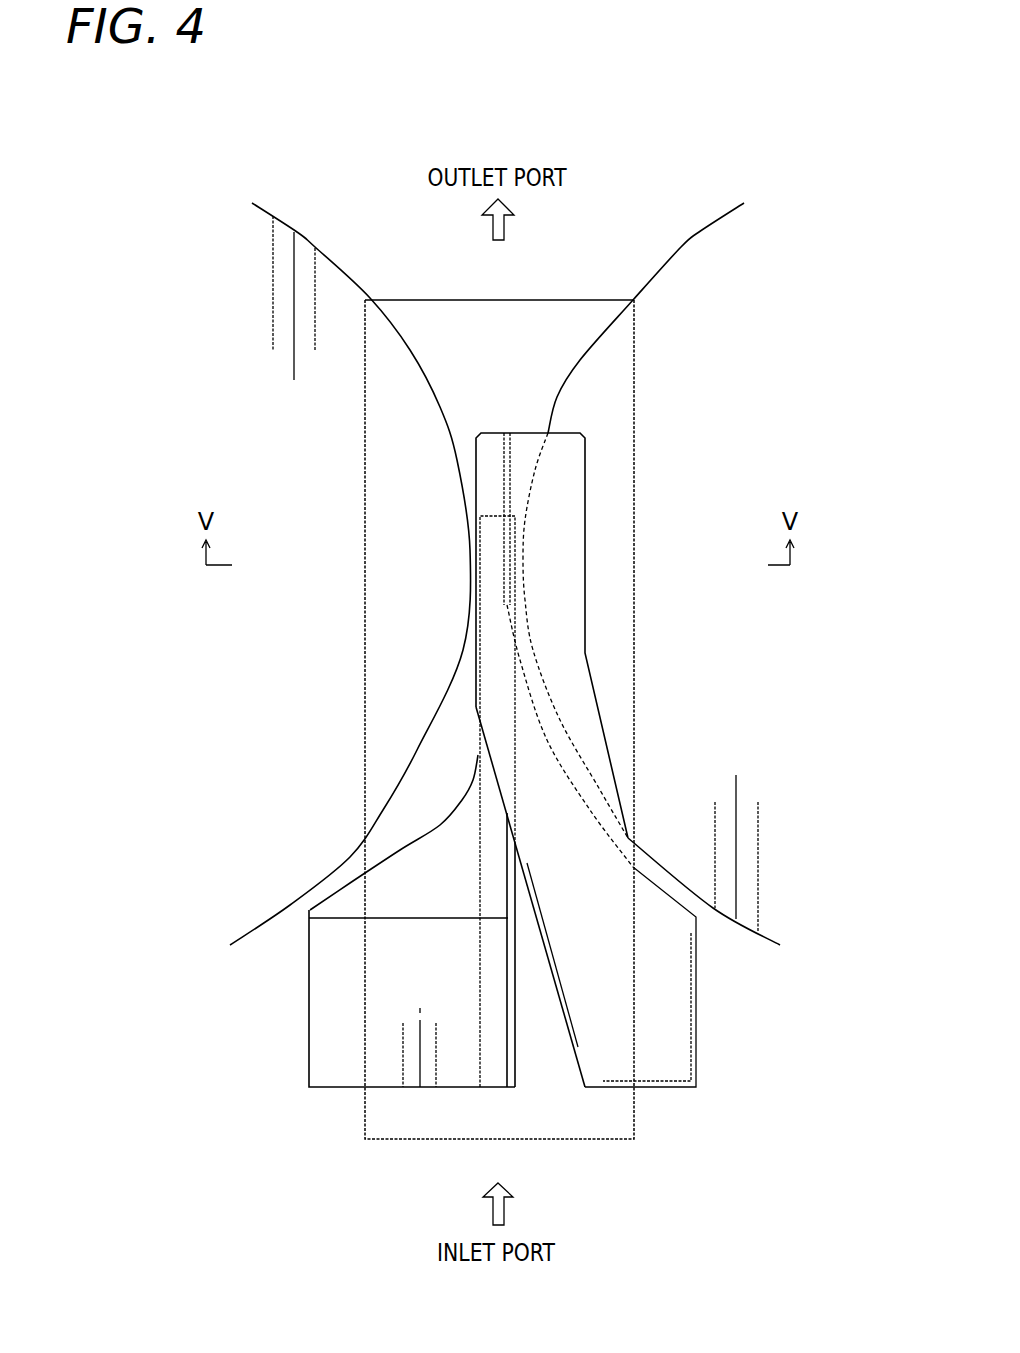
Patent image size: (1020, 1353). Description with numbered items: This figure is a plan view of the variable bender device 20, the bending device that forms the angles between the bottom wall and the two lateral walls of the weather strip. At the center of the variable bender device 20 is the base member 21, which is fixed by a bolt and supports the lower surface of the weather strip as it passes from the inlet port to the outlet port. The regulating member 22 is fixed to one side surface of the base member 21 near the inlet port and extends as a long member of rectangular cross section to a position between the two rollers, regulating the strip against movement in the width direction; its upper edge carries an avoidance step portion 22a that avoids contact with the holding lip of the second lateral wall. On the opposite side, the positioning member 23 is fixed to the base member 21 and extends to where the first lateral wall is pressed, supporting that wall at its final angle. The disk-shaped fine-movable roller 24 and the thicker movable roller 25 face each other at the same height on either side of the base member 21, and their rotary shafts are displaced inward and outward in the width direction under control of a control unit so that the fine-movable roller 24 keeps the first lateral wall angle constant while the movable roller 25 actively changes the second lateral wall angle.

The variable bender device 20 is at (558, 245).
The base member 21 is at (435, 318).
The regulating member 22 is at (490, 808).
The avoidance step portion 22a is at (512, 1000).
The positioning member 23 is at (558, 622).
The fine-movable roller 24 is at (687, 303).
The movable roller 25 is at (337, 307).